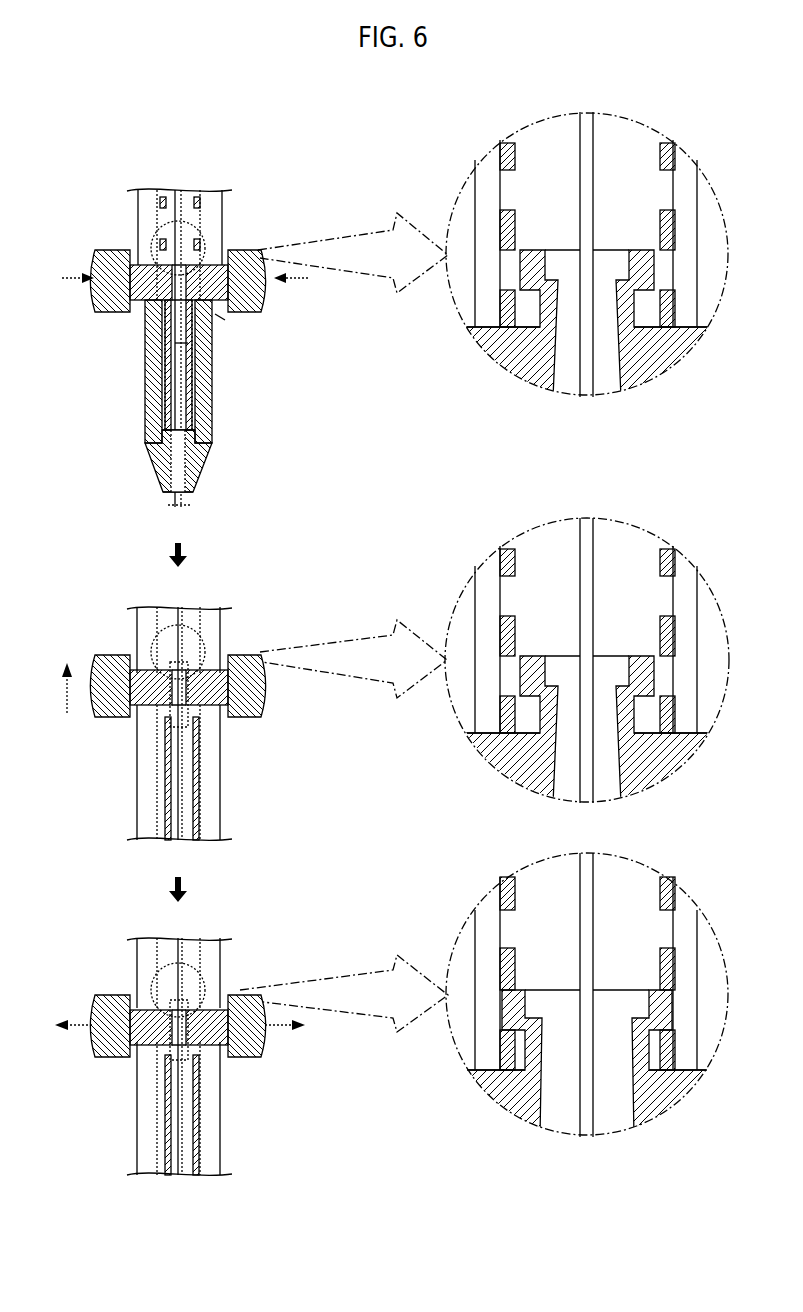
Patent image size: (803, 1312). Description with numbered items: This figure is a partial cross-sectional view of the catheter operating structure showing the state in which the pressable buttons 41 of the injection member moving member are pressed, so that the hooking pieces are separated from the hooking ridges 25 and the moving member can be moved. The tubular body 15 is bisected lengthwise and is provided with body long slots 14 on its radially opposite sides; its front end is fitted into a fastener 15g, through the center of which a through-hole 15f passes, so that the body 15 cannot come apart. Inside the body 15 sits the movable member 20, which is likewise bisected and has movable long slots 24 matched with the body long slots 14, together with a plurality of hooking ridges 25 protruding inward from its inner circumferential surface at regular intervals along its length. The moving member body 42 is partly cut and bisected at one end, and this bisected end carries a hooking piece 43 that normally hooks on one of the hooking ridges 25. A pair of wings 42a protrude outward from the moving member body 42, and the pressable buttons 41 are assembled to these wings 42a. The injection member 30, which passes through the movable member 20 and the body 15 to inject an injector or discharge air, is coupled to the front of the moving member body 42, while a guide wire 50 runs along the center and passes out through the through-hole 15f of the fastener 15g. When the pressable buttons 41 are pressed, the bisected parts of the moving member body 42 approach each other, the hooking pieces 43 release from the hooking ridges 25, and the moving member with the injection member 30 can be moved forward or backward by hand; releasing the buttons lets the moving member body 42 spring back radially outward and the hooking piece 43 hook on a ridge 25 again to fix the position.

The body long slots 14 is at (142, 211).
The movable long slots 24 is at (160, 227).
The hooking ridges 25 is at (193, 194).
The pressable buttons 41 is at (262, 302).
The moving member body 42 is at (168, 322).
The wings 42a is at (215, 314).
The hooking piece 43 is at (522, 268).
The movable member 20 is at (150, 381).
The injection member 30 is at (200, 379).
The body 15 is at (200, 405).
The fastener 15g is at (212, 454).
The through-hole 15f is at (192, 491).
The guide wire 50 is at (176, 470).